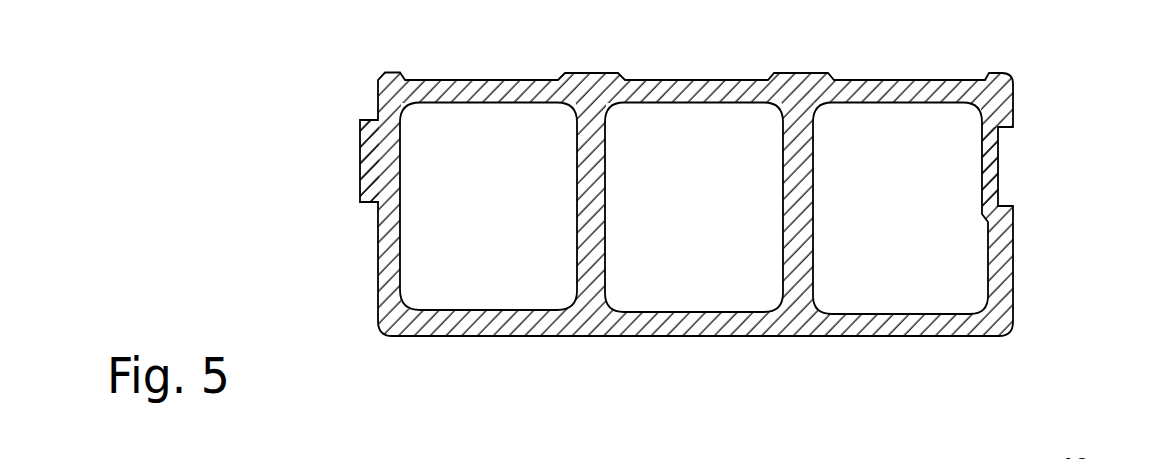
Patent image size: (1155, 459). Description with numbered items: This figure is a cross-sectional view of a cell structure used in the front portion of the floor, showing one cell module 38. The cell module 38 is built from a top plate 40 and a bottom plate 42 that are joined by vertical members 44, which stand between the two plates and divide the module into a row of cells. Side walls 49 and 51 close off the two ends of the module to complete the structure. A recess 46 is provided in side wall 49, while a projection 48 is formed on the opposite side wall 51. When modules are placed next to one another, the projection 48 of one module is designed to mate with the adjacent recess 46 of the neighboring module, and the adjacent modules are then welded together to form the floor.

The cell module 38 is at (848, 65).
The top plate 40 is at (670, 80).
The bottom plate 42 is at (716, 333).
The vertical members 44 is at (562, 298).
The recess 46 is at (1014, 173).
The projection 48 is at (360, 160).
The side wall 49 is at (1013, 283).
The side wall 51 is at (377, 269).